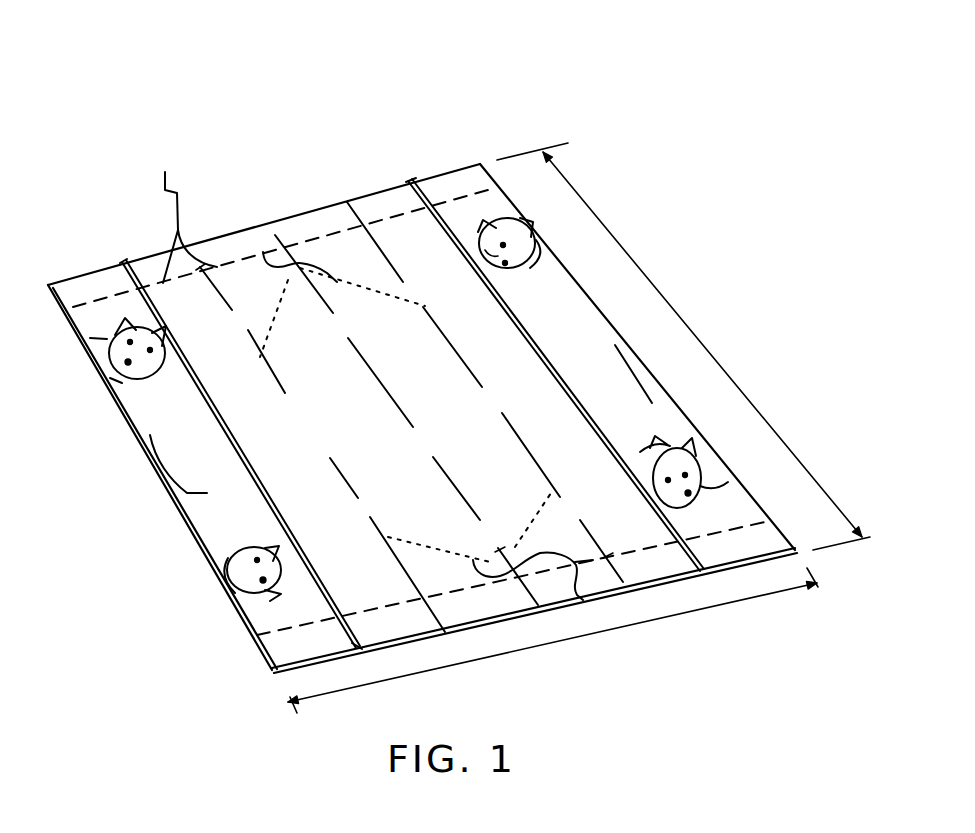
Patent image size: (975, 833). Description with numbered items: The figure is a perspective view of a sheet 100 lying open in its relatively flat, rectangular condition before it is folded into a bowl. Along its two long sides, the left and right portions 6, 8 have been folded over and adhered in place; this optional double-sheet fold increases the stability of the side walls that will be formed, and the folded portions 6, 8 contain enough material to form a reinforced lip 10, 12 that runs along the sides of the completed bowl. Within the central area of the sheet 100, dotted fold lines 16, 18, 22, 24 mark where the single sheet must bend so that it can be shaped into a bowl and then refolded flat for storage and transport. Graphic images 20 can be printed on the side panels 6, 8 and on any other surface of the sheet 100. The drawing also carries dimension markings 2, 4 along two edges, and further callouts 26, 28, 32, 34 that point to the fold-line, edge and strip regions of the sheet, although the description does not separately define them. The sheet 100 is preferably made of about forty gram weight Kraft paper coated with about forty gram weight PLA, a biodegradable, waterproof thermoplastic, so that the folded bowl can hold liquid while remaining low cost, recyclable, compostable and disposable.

The sheet 100 is at (150, 105).
The length of mat 2 is at (697, 318).
The width of mat 4 is at (530, 647).
The left portion 6 is at (150, 415).
The right portion 8 is at (570, 305).
The reinforced lip 10 is at (125, 262).
The reinforced lip 12 is at (408, 181).
The fold line 16 is at (272, 228).
The fold line 18 is at (347, 203).
The graphic images 20 is at (183, 493).
The fold line 22 is at (583, 600).
The fold line 24 is at (275, 250).
The fold line 26 is at (328, 235).
The lower pocket outline 28 is at (413, 602).
The fastener at strip end 32 is at (182, 217).
The strip lower end 34 is at (382, 628).